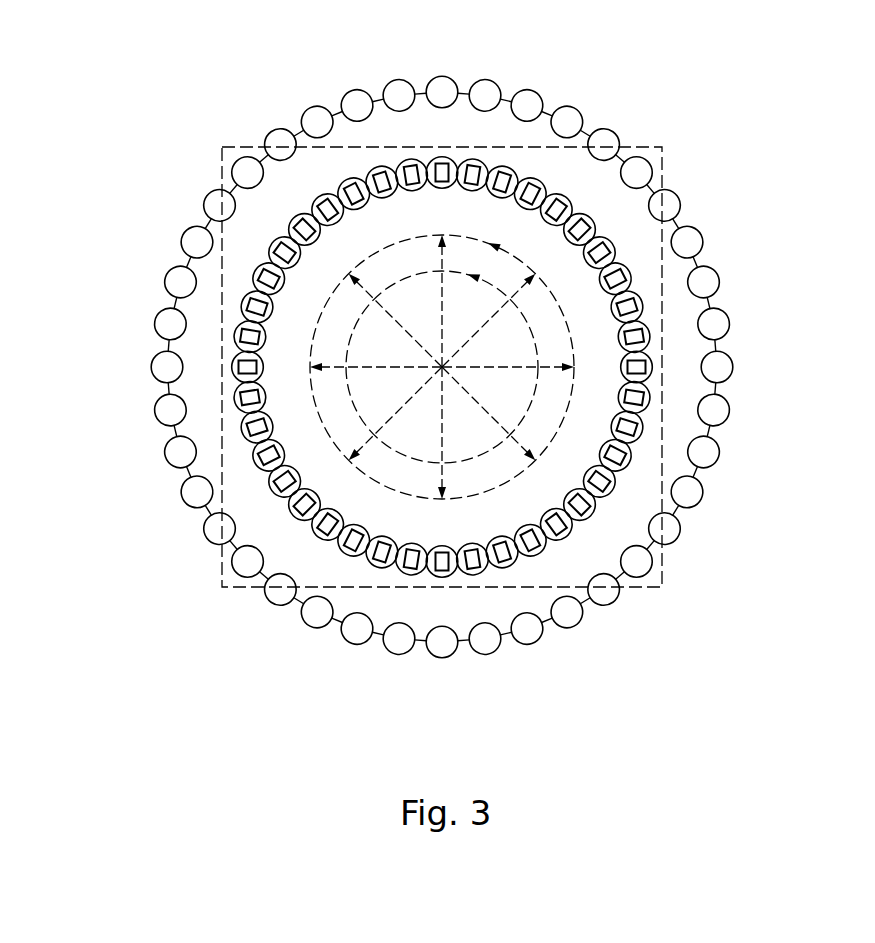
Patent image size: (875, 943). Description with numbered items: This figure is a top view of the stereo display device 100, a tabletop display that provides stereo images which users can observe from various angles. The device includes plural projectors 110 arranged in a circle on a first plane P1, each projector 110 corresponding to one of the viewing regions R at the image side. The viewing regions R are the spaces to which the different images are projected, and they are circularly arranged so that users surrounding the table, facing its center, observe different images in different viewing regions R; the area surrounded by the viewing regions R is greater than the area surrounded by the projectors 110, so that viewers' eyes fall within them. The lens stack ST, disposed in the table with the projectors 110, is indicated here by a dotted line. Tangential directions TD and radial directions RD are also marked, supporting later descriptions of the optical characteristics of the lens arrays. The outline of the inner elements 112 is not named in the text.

The viewing region R is at (528, 100).
The first plane P1 is at (697, 473).
The stereo display device 100 is at (545, 324).
The projector 110 is at (613, 242).
The sub-pattern 112 is at (556, 204).
The lens stack ST is at (662, 313).
The radial direction RD is at (442, 477).
The tangential direction TD is at (481, 494).